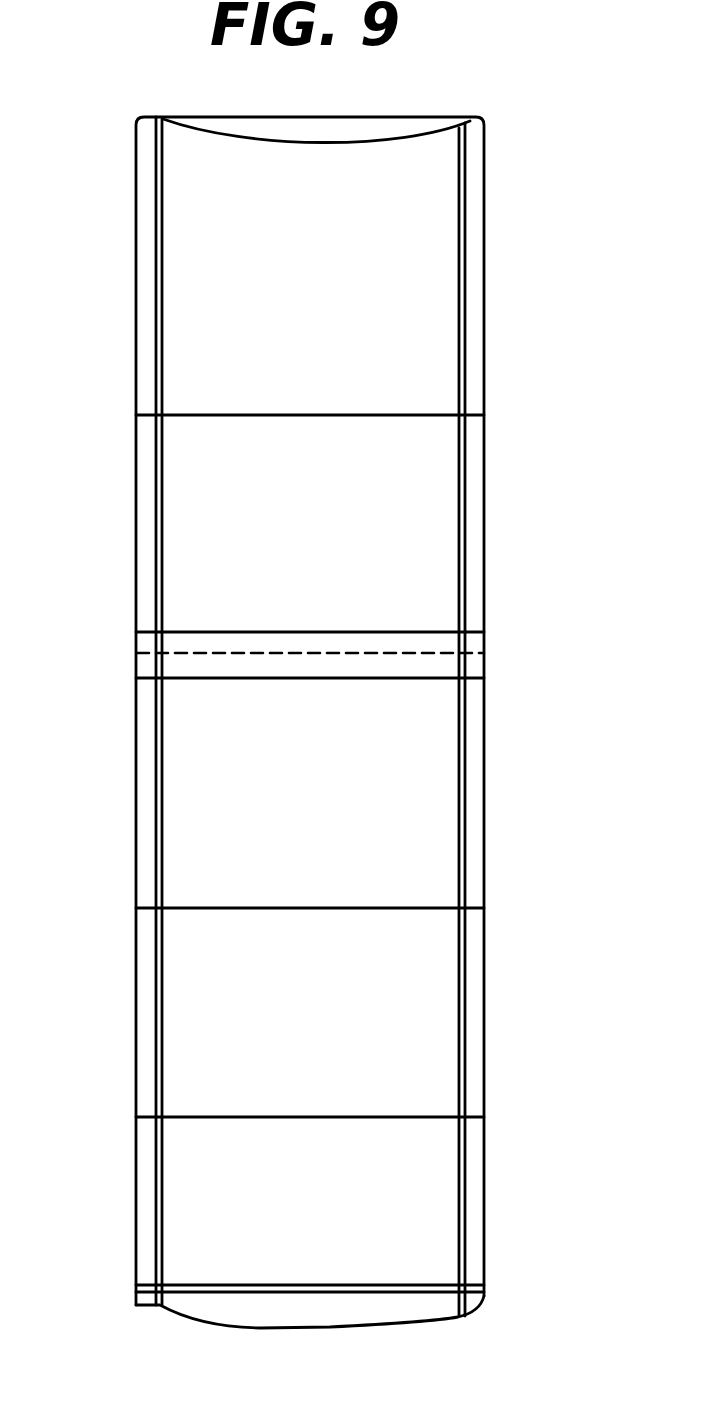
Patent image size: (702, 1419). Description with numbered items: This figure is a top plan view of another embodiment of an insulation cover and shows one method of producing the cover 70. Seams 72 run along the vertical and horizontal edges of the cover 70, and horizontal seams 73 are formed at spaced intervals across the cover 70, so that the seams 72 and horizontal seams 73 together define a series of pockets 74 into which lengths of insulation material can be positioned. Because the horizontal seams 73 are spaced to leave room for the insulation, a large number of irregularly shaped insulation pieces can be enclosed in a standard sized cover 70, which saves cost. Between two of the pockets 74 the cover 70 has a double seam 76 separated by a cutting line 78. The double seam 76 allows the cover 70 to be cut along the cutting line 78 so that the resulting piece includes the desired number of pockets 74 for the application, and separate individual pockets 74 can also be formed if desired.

The cover 70 is at (485, 188).
The seams 72 is at (466, 340).
The horizontal seams 73 is at (200, 415).
The pockets 74 is at (428, 272).
The double seam 76 is at (435, 632).
The cutting line 78 is at (484, 653).